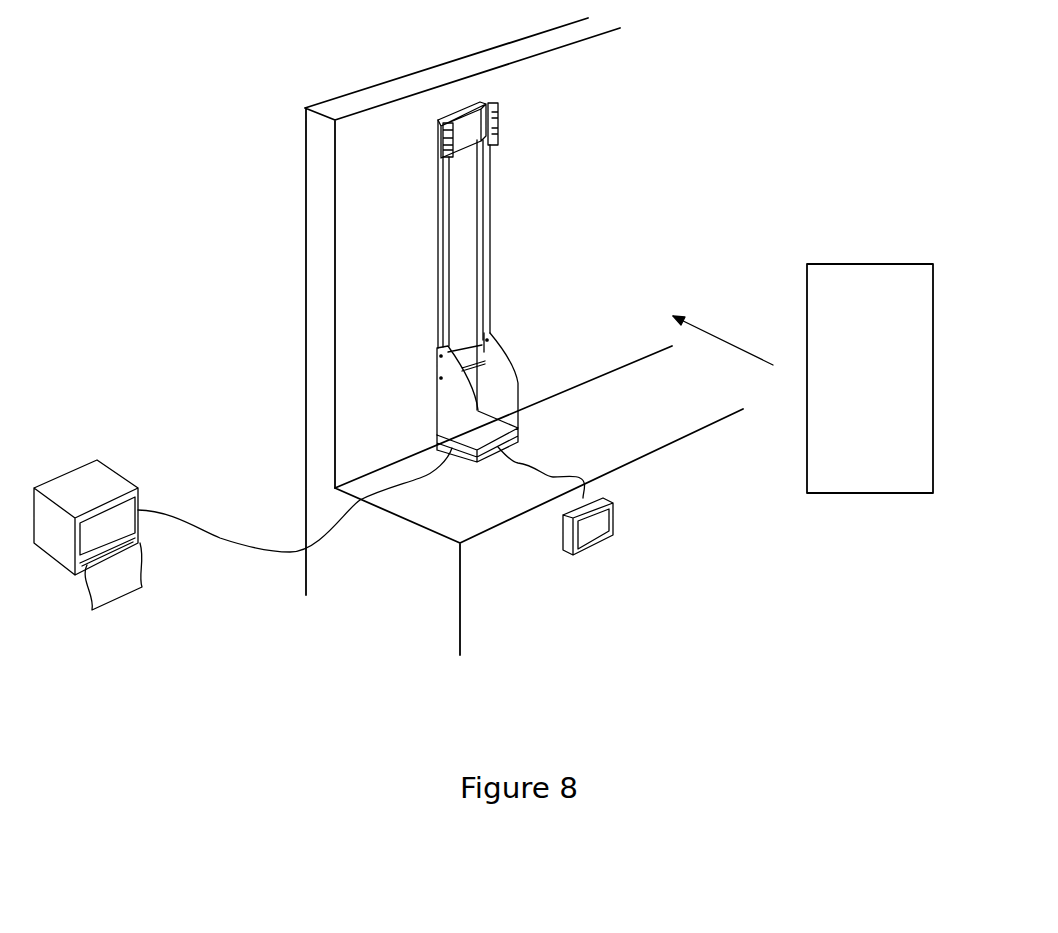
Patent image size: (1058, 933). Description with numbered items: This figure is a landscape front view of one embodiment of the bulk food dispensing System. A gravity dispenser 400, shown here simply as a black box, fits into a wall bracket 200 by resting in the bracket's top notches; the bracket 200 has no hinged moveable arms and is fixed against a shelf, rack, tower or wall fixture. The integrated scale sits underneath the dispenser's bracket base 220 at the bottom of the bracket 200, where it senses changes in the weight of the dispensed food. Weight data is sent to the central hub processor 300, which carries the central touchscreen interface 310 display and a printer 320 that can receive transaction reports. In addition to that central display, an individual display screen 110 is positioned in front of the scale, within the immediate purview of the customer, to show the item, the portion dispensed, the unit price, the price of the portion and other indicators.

The wall bracket 200 is at (495, 237).
The bracket base 220 is at (503, 397).
The individual display screen 110 is at (595, 530).
The central hub processor 300 is at (104, 510).
The central touchscreen interface 310 is at (120, 518).
The printer 320 is at (127, 547).
The gravity dispenser 400 is at (862, 253).